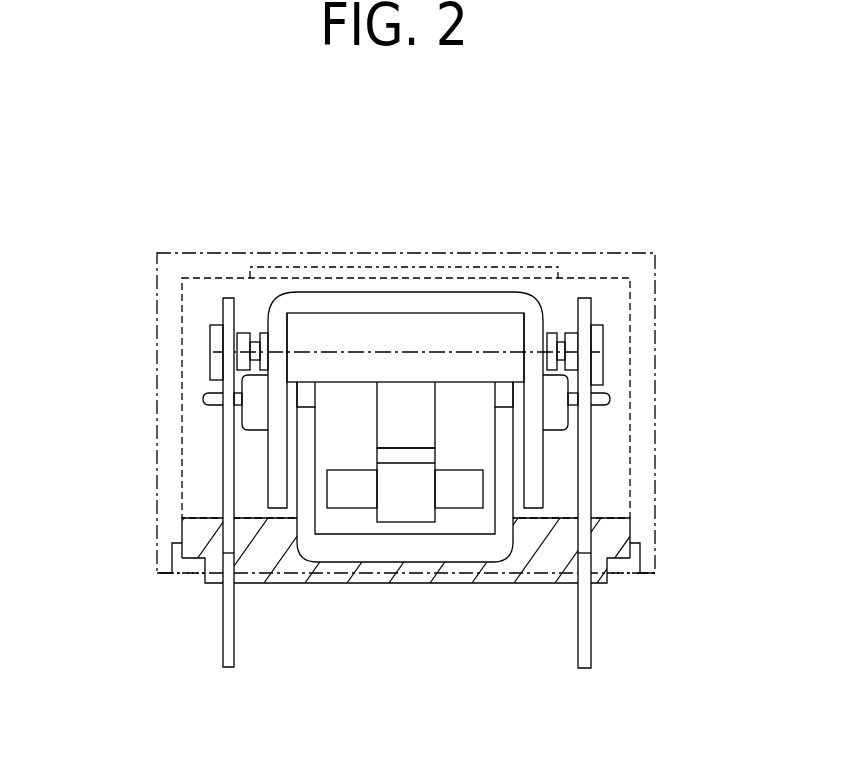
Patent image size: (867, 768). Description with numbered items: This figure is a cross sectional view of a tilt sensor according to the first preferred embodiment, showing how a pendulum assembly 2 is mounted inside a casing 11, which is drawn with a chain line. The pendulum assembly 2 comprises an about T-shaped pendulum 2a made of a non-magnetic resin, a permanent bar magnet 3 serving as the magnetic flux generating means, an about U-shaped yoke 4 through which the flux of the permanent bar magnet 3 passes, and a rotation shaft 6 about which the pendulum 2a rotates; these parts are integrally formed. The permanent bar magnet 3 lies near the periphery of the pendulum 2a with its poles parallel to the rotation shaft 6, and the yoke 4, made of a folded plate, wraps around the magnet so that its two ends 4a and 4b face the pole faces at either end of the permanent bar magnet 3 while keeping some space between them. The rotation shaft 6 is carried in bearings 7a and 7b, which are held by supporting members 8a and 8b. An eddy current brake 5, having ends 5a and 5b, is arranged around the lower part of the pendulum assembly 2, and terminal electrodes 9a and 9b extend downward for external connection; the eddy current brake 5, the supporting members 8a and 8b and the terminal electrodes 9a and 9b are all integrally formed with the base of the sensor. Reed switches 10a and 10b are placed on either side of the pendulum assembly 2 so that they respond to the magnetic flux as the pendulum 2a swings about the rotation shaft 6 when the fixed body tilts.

The pendulum assembly 2 is at (404, 303).
The pendulum 2a is at (345, 338).
The permanent bar magnet 3 is at (353, 510).
The yoke 4 is at (410, 364).
The end of the yoke 4a is at (275, 492).
The end of the yoke 4b is at (538, 490).
The eddy current brake 5 is at (410, 526).
The end of the eddy current brake 5a is at (310, 437).
The end of the eddy current brake 5b is at (507, 468).
The rotation shaft 6 is at (252, 337).
The bearing 7a is at (217, 368).
The bearing 7b is at (597, 337).
The supporting member 8a is at (228, 305).
The supporting member 8b is at (585, 305).
The terminal electrode 9a is at (230, 642).
The terminal electrode 9b is at (585, 637).
The reed switch 10a is at (255, 415).
The reed switch 10b is at (576, 402).
The casing 11 is at (643, 273).